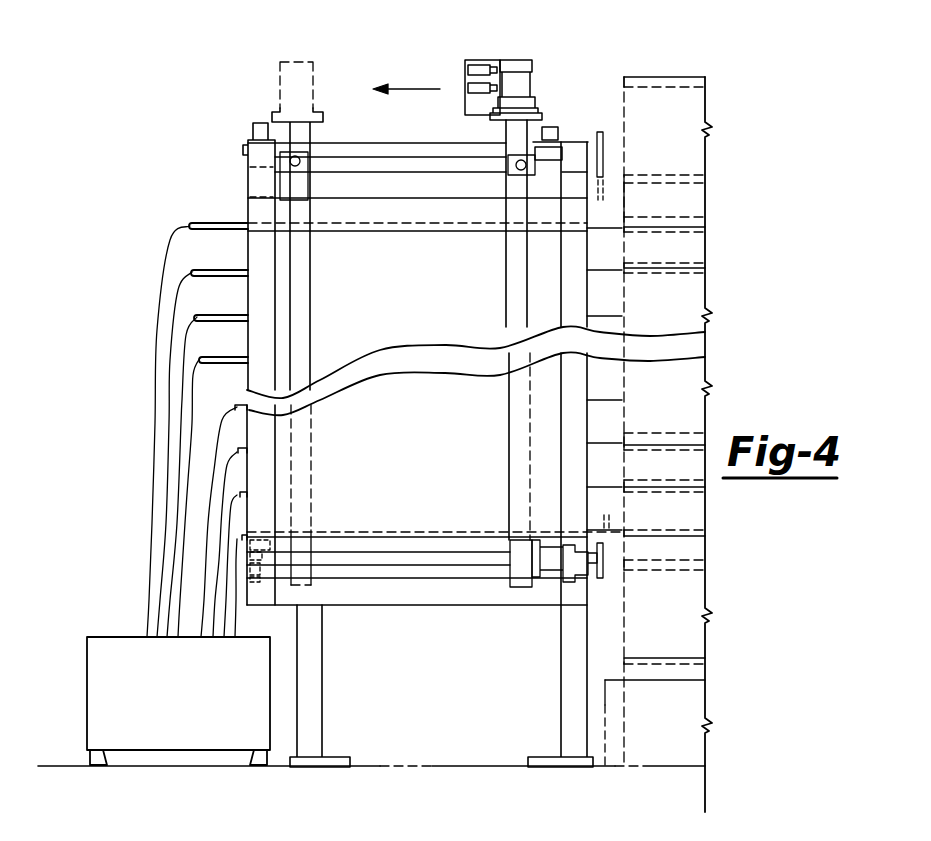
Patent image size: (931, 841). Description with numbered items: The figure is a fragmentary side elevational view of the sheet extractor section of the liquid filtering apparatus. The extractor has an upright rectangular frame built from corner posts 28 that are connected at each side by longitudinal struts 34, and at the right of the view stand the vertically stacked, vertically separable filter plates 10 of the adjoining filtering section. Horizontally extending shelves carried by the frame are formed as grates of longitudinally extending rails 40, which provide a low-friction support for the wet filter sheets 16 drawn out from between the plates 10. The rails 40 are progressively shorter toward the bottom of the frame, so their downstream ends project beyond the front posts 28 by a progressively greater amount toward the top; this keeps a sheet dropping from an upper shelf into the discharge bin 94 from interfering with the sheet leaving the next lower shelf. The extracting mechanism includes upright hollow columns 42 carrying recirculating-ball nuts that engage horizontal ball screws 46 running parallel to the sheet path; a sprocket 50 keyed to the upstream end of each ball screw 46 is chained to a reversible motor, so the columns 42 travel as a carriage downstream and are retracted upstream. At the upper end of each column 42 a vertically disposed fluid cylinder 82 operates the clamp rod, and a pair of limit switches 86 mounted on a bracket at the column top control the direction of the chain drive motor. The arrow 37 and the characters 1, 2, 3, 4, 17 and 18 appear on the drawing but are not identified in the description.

The shelf position 1 is at (604, 511).
The shelf position 2 is at (604, 470).
The shelf position 3 is at (604, 427).
The shelf position 4 is at (604, 384).
The filter sheets 16 is at (606, 301).
The shelf position 17 is at (605, 256).
The shelf position 18 is at (606, 213).
The plates 10 is at (700, 256).
The corner posts 28 is at (265, 303).
The longitudinal struts 34 is at (384, 212).
The direction of movement arrow 37 is at (390, 240).
The rails 40 is at (209, 194).
The upright hollow columns 42 is at (304, 344).
The ball screw 46 is at (357, 150).
The sprocket 50 is at (599, 131).
The fluid cylinder 82 is at (525, 80).
The limit switches 86 is at (480, 90).
The discharge bin 94 is at (107, 644).